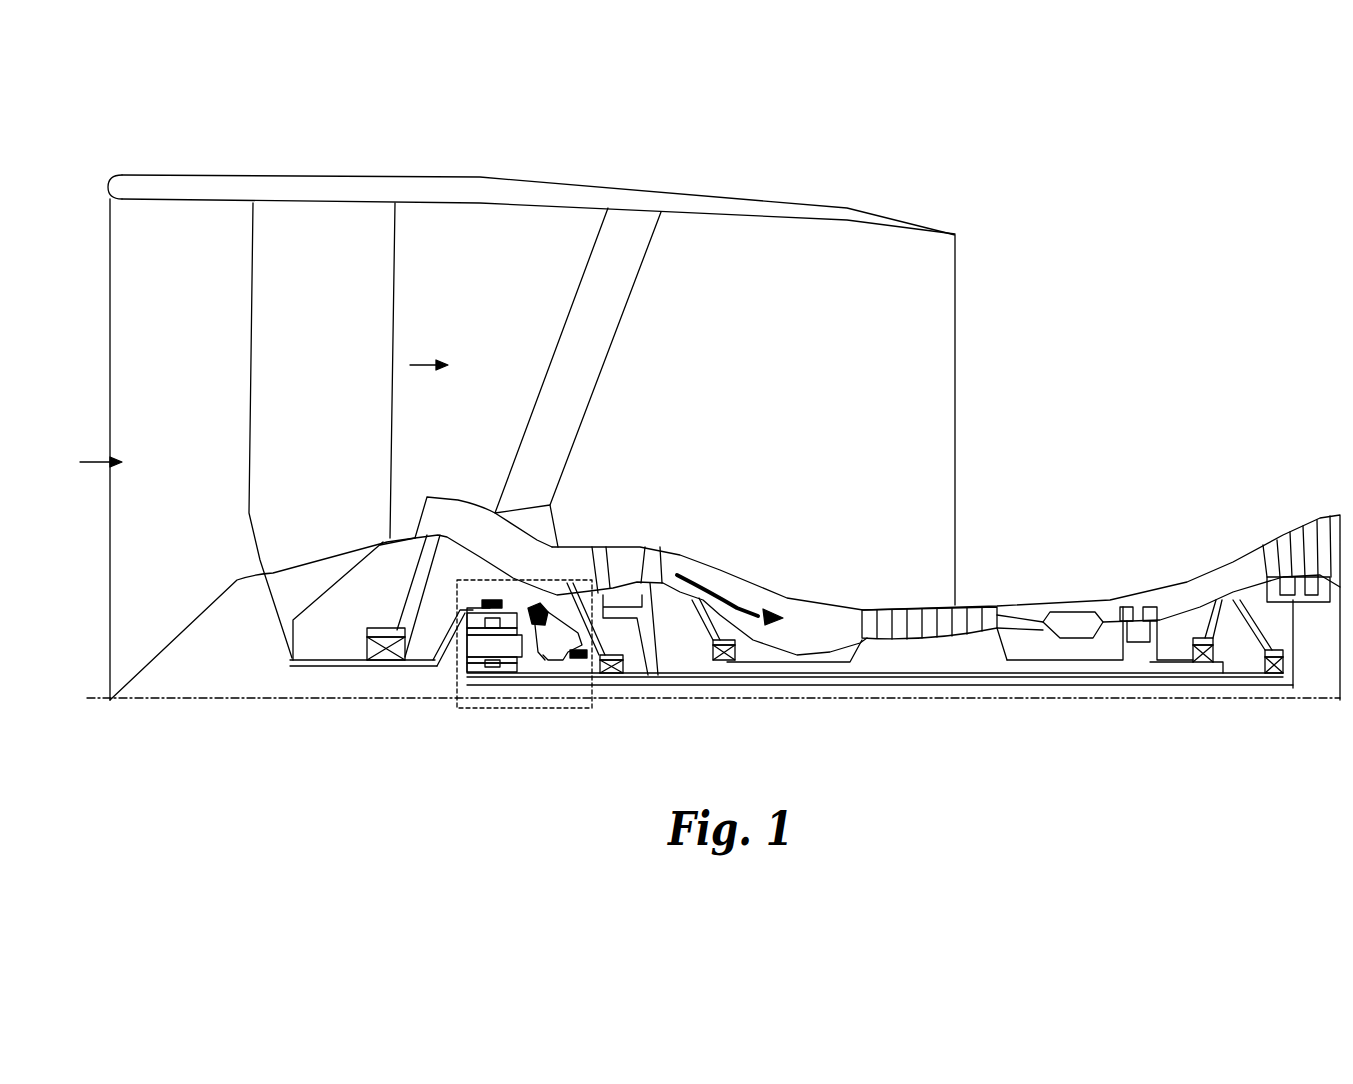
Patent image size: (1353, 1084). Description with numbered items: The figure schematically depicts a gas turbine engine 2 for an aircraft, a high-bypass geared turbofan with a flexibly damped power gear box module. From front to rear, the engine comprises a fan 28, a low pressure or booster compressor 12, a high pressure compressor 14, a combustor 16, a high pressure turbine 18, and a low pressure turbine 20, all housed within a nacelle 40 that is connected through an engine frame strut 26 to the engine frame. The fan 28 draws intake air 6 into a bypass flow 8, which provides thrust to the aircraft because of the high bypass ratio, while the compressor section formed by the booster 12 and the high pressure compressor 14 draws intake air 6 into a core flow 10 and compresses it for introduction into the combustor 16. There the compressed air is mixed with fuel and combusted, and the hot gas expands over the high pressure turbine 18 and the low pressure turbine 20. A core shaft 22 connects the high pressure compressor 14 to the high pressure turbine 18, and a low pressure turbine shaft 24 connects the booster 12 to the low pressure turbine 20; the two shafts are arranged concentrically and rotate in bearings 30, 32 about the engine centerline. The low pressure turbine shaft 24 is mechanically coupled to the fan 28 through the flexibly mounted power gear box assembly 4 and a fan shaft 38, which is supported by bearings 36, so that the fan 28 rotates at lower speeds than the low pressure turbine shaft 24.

The gas turbine engine 2 is at (250, 130).
The power gear box assembly 4 is at (473, 708).
The intake air 6 is at (92, 462).
The bypass flow 8 is at (430, 364).
The core flow 10 is at (722, 599).
The booster compressor 12 is at (592, 524).
The high pressure compressor 14 is at (995, 590).
The combustor 16 is at (1070, 615).
The high pressure turbine 18 is at (1110, 588).
The low pressure turbine 20 is at (1258, 497).
The core shaft 22 is at (910, 662).
The low pressure turbine shaft 24 is at (532, 680).
The engine frame strut 26 is at (612, 235).
The fan 28 is at (268, 385).
The bearing 30 is at (1205, 662).
The bearing 32 is at (606, 675).
The bearing 36 is at (375, 660).
The fan shaft 38 is at (417, 666).
The nacelle 40 is at (698, 197).